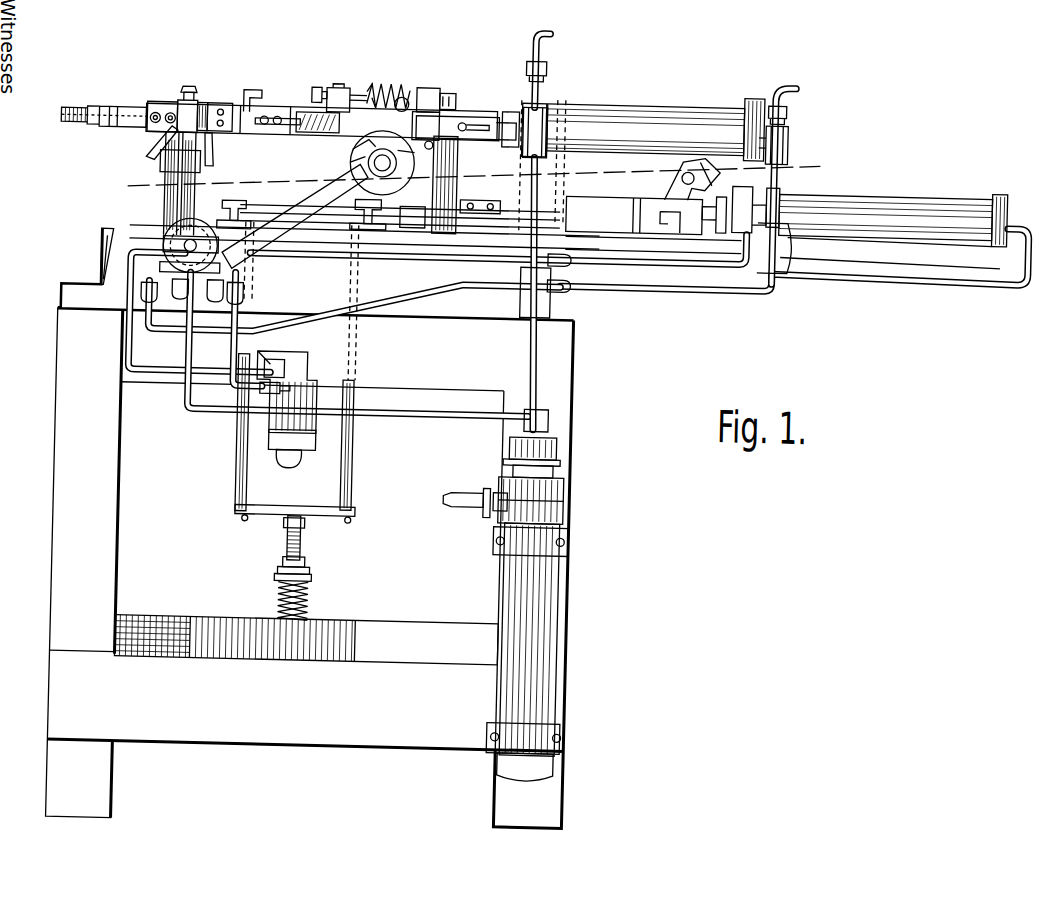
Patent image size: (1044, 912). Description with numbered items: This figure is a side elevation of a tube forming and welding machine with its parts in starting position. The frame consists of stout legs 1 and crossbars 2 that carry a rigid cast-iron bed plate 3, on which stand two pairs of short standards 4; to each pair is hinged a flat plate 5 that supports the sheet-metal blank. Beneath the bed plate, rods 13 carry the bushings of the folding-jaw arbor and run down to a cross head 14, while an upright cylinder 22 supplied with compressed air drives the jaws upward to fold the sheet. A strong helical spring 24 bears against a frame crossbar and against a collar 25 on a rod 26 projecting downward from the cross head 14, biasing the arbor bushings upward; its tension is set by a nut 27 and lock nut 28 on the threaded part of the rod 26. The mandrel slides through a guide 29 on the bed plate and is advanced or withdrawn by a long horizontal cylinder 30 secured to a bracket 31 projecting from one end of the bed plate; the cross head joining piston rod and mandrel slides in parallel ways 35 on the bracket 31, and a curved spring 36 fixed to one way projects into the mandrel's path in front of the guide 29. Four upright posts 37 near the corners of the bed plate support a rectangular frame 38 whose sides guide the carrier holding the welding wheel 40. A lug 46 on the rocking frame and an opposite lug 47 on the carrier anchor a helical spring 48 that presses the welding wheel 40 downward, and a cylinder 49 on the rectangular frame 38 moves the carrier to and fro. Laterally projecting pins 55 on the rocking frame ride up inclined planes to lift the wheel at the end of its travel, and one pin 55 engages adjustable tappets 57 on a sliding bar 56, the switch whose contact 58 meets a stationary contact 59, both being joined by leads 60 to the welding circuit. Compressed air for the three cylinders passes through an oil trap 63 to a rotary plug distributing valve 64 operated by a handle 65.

The legs 1 is at (62, 498).
The crossbars 2 is at (305, 669).
The bed plate 3 is at (101, 260).
The standards 4 is at (222, 207).
The flat plate 5 is at (253, 179).
The rods 13 is at (243, 468).
The cross head 14 is at (304, 507).
The upright cylinder 22 is at (320, 402).
The helical spring 24 is at (285, 600).
The collar 25 is at (281, 577).
The rod 26 is at (293, 544).
The nut 27 is at (312, 572).
The lock nut 28 is at (308, 565).
The guide 29 is at (415, 212).
The horizontal cylinder 30 is at (905, 190).
The bracket 31 is at (651, 283).
The parallel ways 35 is at (679, 214).
The curved spring 36 is at (464, 203).
The upright posts 37 is at (179, 201).
The rectangular frame 38 is at (326, 129).
The welding wheel 40 is at (347, 156).
The lug 46 is at (452, 98).
The lug 47 is at (334, 87).
The helical spring 48 is at (386, 94).
The cylinder 49 is at (660, 105).
The laterally projecting pins 55 is at (412, 97).
The sliding bar 56 is at (306, 116).
The adjustable tappets 57 is at (248, 97).
The contact 58 is at (216, 112).
The stationary contact 59 is at (194, 113).
The leads 60 is at (160, 155).
The oil trap 63 is at (518, 587).
The distributing valve 64 is at (178, 235).
The handle 65 is at (332, 189).